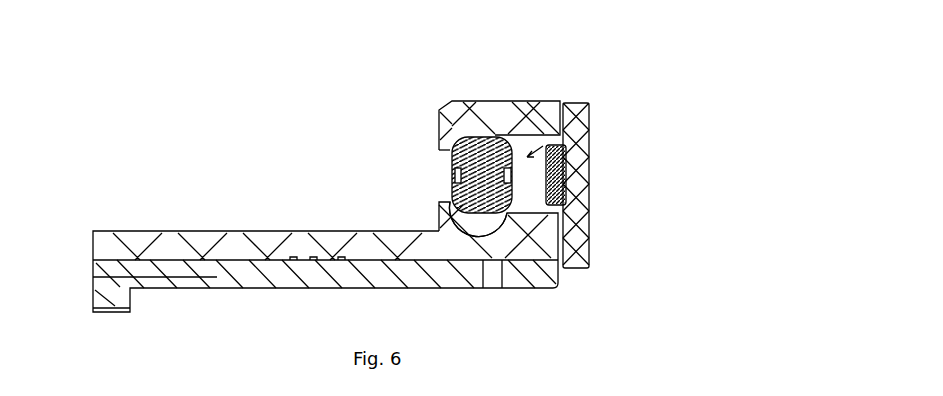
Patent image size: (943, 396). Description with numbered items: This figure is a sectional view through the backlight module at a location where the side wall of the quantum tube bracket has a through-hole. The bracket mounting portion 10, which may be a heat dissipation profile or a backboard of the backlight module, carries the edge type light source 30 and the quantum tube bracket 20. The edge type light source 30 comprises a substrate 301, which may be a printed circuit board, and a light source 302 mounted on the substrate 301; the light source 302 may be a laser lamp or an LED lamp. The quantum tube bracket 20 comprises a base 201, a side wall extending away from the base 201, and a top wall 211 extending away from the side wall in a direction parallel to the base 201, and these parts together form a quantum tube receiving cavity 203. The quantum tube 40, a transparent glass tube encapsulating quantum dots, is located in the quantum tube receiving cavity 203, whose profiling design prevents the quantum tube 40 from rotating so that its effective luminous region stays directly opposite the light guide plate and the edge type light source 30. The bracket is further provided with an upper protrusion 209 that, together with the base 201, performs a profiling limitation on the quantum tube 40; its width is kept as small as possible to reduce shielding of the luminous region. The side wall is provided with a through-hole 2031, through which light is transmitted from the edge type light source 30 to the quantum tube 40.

The bracket mounting portion 10 is at (93, 274).
The quantum tube 40 is at (452, 158).
The upper protrusion 209 is at (440, 132).
The quantum tube bracket 20 is at (500, 112).
The top wall 211 is at (527, 115).
The edge type light source 30 is at (573, 103).
The quantum tube receiving cavity 203 is at (572, 133).
The substrate 301 is at (567, 158).
The light source 302 is at (567, 192).
The through-hole 2031 is at (523, 205).
The base 201 is at (452, 207).